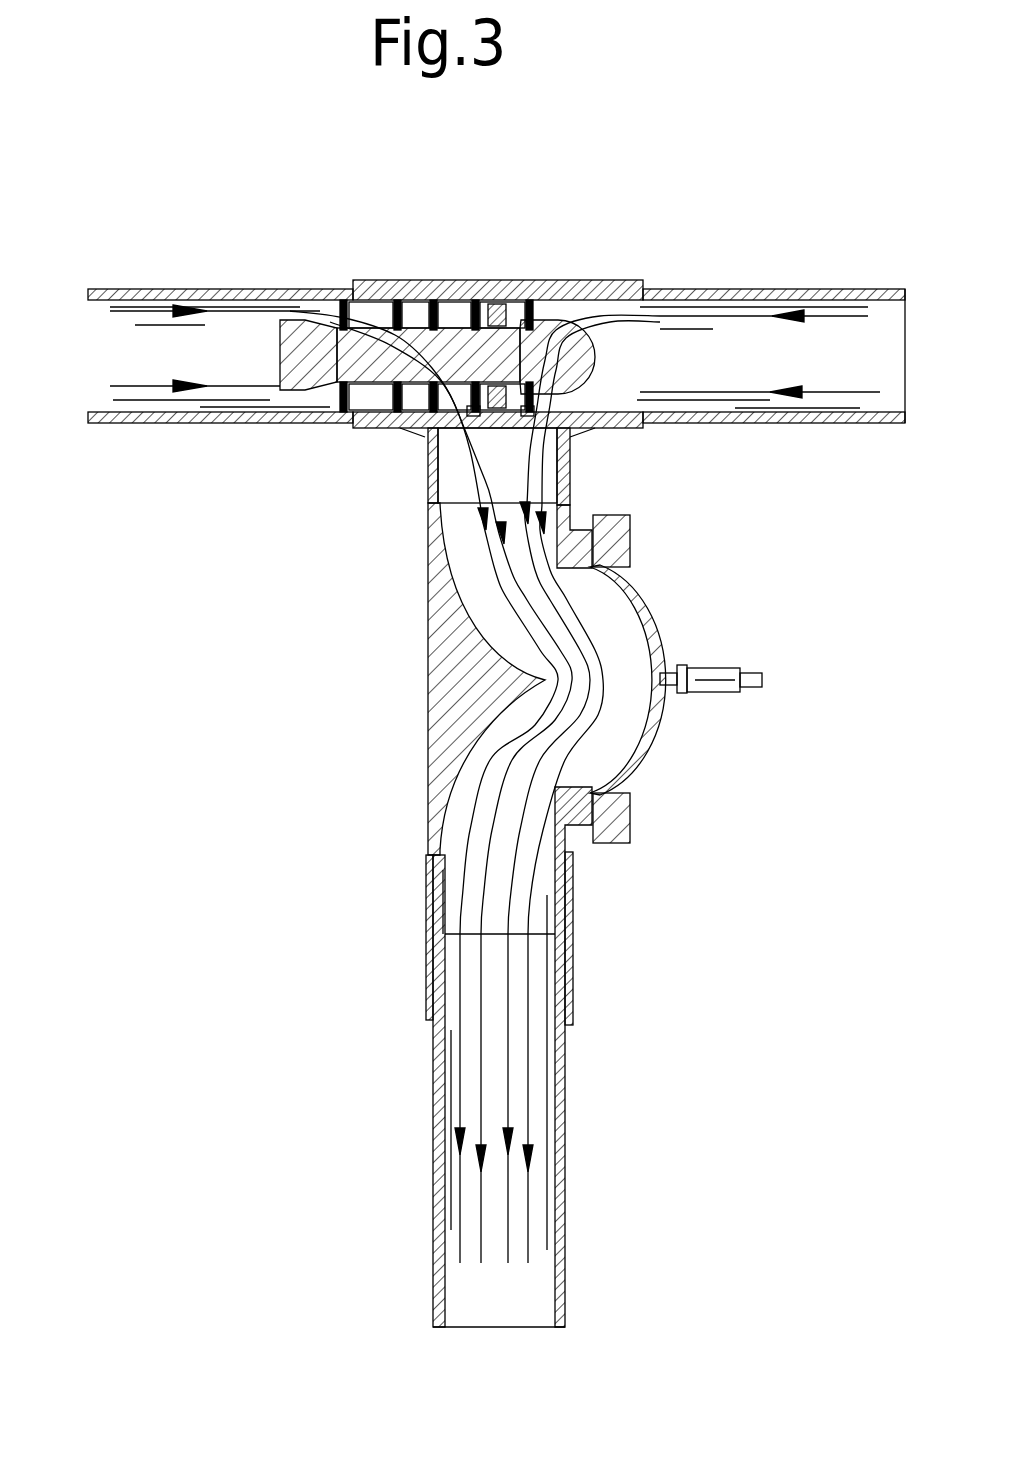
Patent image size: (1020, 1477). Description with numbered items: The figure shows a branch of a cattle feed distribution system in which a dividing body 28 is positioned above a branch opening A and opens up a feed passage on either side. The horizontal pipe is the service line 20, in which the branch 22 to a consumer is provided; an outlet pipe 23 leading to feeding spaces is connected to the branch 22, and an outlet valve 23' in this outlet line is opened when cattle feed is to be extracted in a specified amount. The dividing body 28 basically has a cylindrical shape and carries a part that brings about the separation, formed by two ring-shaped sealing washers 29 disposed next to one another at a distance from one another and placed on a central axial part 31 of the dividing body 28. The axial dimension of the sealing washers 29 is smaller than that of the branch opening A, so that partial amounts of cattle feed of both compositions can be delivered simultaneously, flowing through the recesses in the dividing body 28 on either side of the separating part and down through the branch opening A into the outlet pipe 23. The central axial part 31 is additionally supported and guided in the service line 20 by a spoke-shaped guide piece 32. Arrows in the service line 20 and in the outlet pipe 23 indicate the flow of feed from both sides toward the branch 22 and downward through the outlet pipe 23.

The service line 20 is at (812, 425).
The branch 22 is at (562, 280).
The outlet pipe 23 is at (475, 819).
The outlet valve 23' is at (676, 679).
The dividing body 28 is at (454, 308).
The ring-shaped sealing washers 29 is at (526, 408).
The central axial part 31 is at (408, 328).
The spoke-shaped guide piece 32 is at (363, 305).
The branch opening A is at (445, 402).